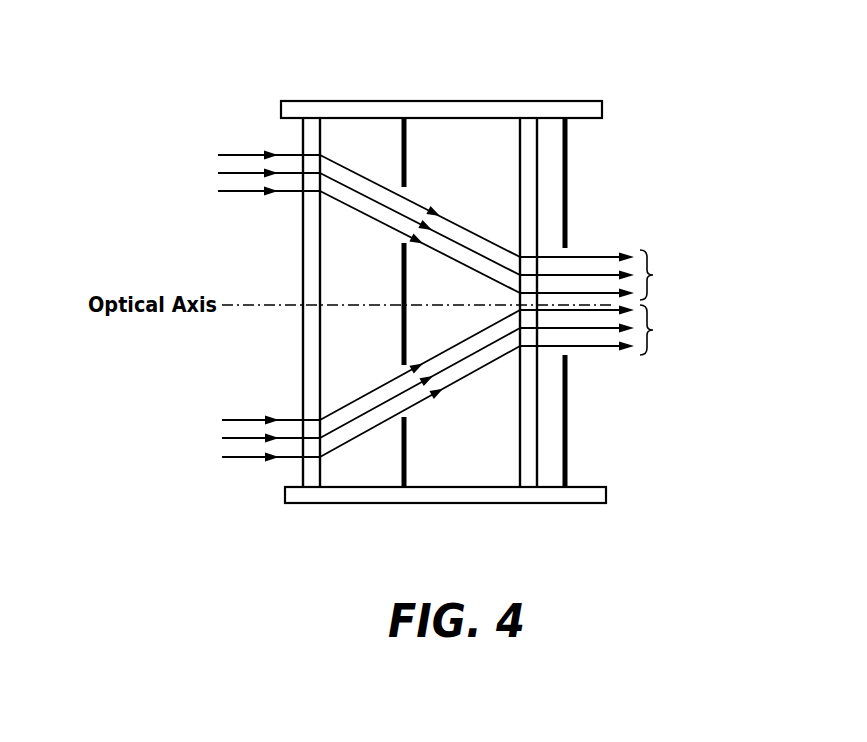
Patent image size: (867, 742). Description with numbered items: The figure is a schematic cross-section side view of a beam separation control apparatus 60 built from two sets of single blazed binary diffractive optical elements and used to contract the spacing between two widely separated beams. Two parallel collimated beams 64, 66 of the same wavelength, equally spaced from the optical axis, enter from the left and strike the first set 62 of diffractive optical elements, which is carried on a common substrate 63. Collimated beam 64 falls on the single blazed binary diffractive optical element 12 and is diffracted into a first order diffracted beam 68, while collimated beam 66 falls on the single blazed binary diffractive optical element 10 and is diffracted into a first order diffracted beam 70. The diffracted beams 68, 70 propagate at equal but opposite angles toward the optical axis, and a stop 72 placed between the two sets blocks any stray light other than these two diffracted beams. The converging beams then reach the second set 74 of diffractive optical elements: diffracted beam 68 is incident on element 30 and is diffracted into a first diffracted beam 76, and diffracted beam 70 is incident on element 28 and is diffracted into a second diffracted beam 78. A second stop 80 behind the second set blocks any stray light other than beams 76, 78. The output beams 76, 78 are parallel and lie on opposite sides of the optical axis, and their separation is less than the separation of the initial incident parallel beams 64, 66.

The beam separation control apparatus 60 is at (439, 50).
The first set of two single blazed binary diffractive optical elements 62 is at (321, 138).
The common substrate 63 is at (316, 474).
The single blazed binary diffractive optical element 12 is at (329, 258).
The single blazed binary diffractive optical element 10 is at (329, 337).
The second set of two single blazed binary diffractive optical elements 74 is at (543, 126).
The single blazed binary diffractive optical element 30 is at (518, 158).
The single blazed binary diffractive optical element 28 is at (518, 392).
The stop 72 is at (410, 460).
The stop 80 is at (568, 460).
The collimated light beam 64 is at (233, 154).
The collimated light beam 66 is at (237, 419).
The first order diffracted beam 68 is at (357, 210).
The first order diffracted beam 70 is at (361, 398).
The first diffracted beam 76 is at (608, 275).
The second diffracted beam 78 is at (608, 330).